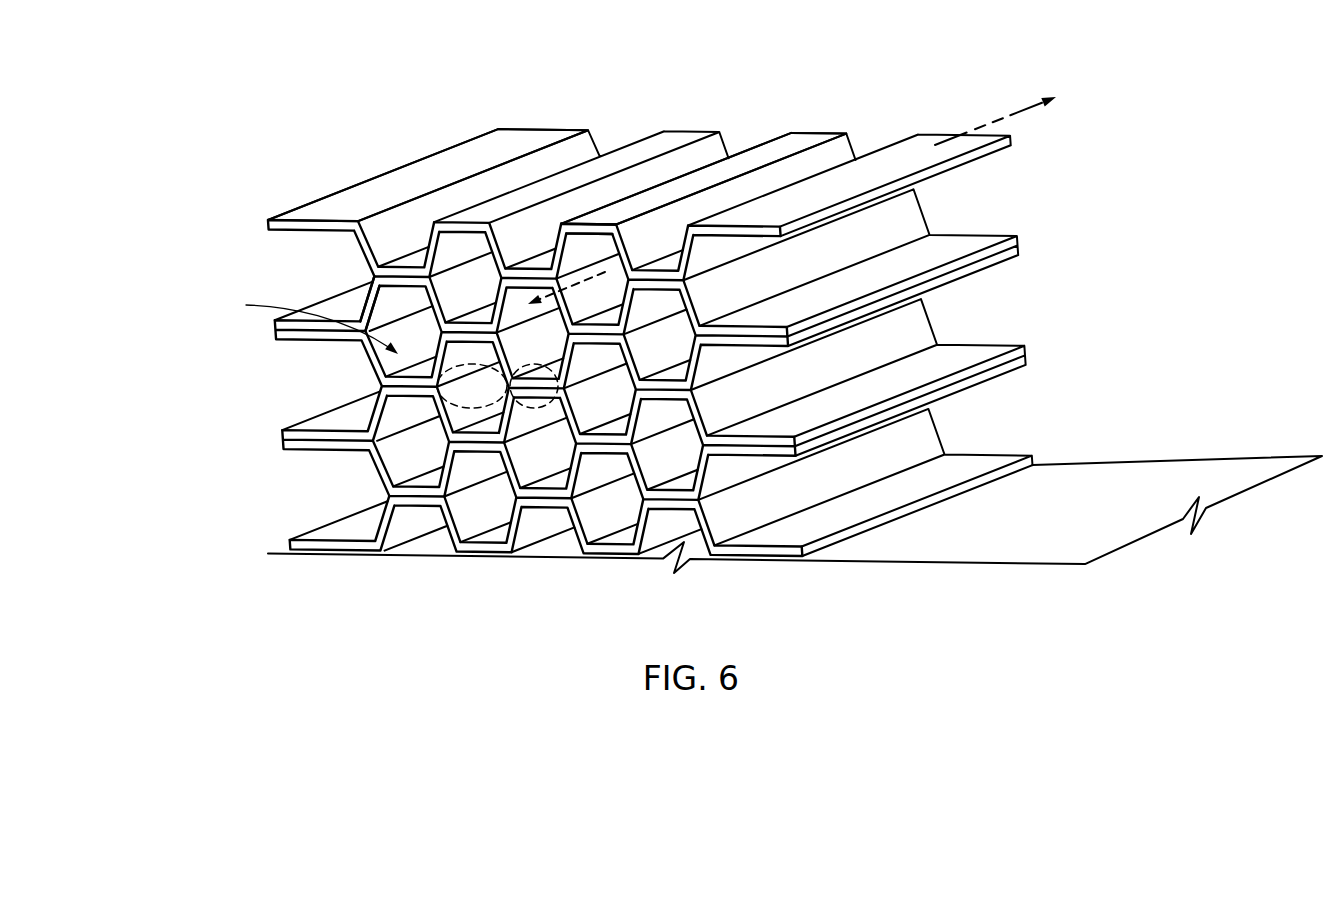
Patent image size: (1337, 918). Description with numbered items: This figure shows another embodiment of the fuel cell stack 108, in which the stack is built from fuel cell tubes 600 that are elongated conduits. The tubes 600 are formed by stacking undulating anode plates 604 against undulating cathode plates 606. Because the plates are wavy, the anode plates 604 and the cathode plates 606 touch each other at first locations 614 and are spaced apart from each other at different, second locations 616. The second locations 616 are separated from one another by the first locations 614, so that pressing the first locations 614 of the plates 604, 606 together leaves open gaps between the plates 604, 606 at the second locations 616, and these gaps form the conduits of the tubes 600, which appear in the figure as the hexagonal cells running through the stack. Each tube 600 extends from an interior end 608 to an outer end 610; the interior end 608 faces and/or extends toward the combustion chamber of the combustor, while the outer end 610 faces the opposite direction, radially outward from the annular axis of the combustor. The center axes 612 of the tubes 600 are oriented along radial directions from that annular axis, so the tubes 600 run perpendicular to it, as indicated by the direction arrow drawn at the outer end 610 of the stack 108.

The fuel cell stack 108 is at (189, 111).
The fuel cell tubes 600 is at (301, 324).
The undulating anode plates 604 is at (513, 141).
The undulating cathode plates 606 is at (347, 302).
The interior end 608 is at (822, 130).
The outer end 610 is at (600, 229).
The center axes 612 is at (1026, 92).
The first locations 614 is at (531, 409).
The second locations 616 is at (458, 410).